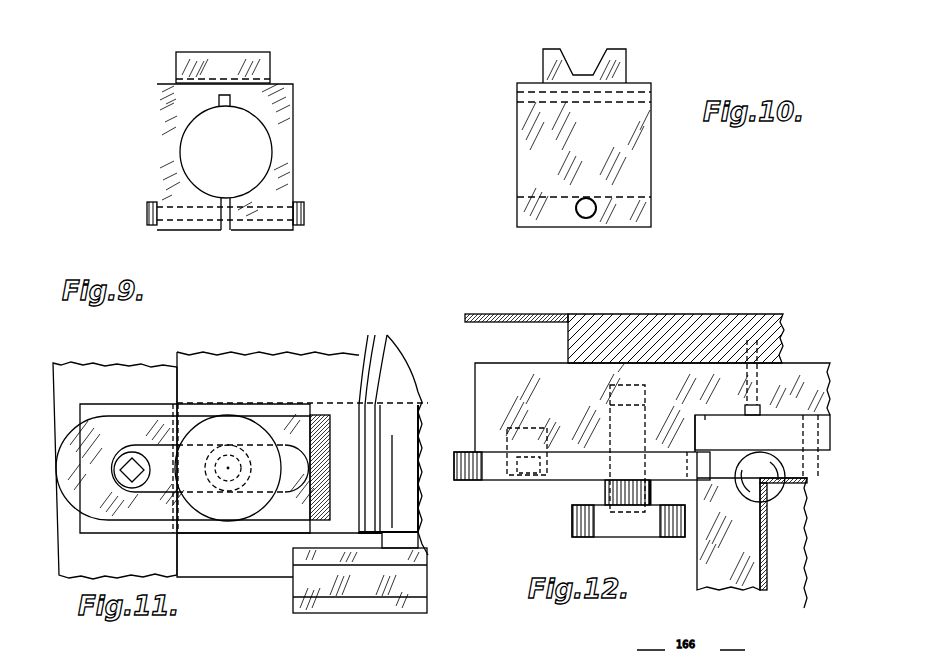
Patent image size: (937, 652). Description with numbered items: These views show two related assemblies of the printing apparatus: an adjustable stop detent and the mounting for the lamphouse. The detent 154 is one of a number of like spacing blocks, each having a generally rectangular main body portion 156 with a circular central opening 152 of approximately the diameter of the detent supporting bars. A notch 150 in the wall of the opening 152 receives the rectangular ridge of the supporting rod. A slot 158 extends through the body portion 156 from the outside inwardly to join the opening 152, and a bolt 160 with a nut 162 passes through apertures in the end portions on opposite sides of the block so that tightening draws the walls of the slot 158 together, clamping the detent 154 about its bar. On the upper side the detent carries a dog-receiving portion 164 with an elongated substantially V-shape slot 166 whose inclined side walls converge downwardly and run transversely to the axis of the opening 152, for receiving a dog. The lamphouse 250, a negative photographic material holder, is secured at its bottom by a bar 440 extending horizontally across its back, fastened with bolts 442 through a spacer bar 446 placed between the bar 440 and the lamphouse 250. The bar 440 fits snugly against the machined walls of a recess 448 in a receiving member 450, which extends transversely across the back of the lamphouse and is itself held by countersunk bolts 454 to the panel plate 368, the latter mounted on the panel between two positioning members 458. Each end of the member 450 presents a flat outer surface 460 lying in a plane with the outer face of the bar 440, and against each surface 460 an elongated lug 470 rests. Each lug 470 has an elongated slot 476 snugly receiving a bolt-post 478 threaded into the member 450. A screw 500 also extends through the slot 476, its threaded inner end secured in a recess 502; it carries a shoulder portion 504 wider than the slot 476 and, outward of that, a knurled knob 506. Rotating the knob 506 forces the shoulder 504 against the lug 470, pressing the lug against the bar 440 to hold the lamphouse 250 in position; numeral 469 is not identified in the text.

In FIG. 9, the notch 150 is at (225, 98).
In FIG. 10, the notch 150 is at (520, 94).
In FIG. 9, the central opening 152 is at (199, 175).
In FIG. 10, the central opening 152 is at (524, 192).
In FIG. 9, the detent 154 is at (304, 152).
In FIG. 10, the detent 154 is at (659, 177).
In FIG. 9, the main body portion 156 is at (158, 142).
In FIG. 9, the slot 158 is at (226, 230).
In FIG. 9, the bolt 160 is at (304, 224).
In FIG. 10, the bolt 160 is at (590, 218).
In FIG. 9, the nut 162 is at (150, 228).
In FIG. 9, the dog-receiving portion 164 is at (279, 63).
In FIG. 10, the V-shape slot 166 is at (578, 52).
In FIG. 11, the lamphouse 250 is at (286, 603).
In FIG. 12, the lamphouse 250 is at (790, 552).
In FIG. 12, the panel plate 368 is at (576, 337).
In FIG. 12, the bar 440 is at (716, 407).
In FIG. 12, the bolt 442 is at (802, 435).
In FIG. 12, the spacer bar 446 is at (792, 483).
In FIG. 11, the recess 448 is at (354, 410).
In FIG. 12, the recess 448 is at (700, 413).
In FIG. 11, the receiving member 450 is at (115, 373).
In FIG. 12, the receiving member 450 is at (476, 372).
In FIG. 12, the countersunk bolt 454 is at (760, 381).
In FIG. 12, the positioning member 458 is at (484, 322).
In FIG. 11, the outer surface 460 is at (166, 561).
In FIG. 12, the roller 469 is at (725, 460).
In FIG. 11, the lug 470 is at (272, 420).
In FIG. 12, the lug 470 is at (497, 476).
In FIG. 11, the elongated slot 476 is at (160, 480).
In FIG. 11, the bolt-post 478 is at (116, 478).
In FIG. 12, the bolt-post 478 is at (528, 478).
In FIG. 12, the screw 500 is at (601, 495).
In FIG. 12, the recess 502 is at (636, 386).
In FIG. 12, the shoulder portion 504 is at (652, 492).
In FIG. 11, the knurled knob 506 is at (221, 425).
In FIG. 12, the knurled knob 506 is at (575, 520).